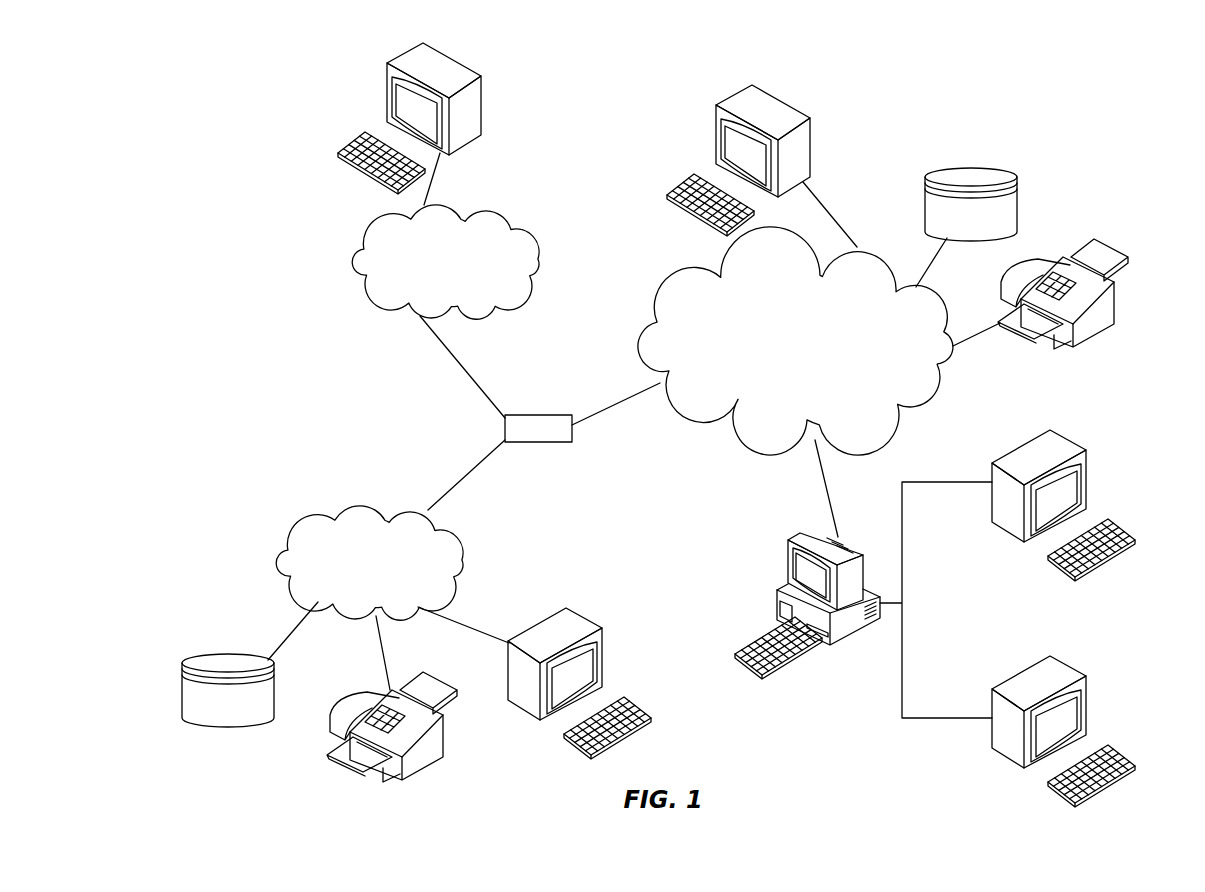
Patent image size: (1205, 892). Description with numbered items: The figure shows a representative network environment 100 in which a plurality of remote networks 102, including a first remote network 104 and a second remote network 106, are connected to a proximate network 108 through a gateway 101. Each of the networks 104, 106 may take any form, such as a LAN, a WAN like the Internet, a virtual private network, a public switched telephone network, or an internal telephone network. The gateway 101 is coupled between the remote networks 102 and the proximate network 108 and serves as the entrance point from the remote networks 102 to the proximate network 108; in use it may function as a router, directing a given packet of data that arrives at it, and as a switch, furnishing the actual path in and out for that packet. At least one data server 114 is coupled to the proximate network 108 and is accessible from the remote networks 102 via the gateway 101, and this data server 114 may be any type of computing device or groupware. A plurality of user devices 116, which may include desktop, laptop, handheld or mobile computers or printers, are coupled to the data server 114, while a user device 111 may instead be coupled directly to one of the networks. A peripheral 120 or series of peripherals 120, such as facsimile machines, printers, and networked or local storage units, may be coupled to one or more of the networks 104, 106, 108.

The network environment 100 is at (268, 86).
The gateway 101 is at (540, 414).
The remote networks 102 is at (359, 354).
The first remote network 104 is at (278, 562).
The second remote network 106 is at (529, 236).
The proximate network 108 is at (915, 402).
The user device 111 is at (812, 134).
The data server 114 is at (787, 562).
The user devices 116 is at (482, 96).
The peripheral 120 is at (1017, 176).